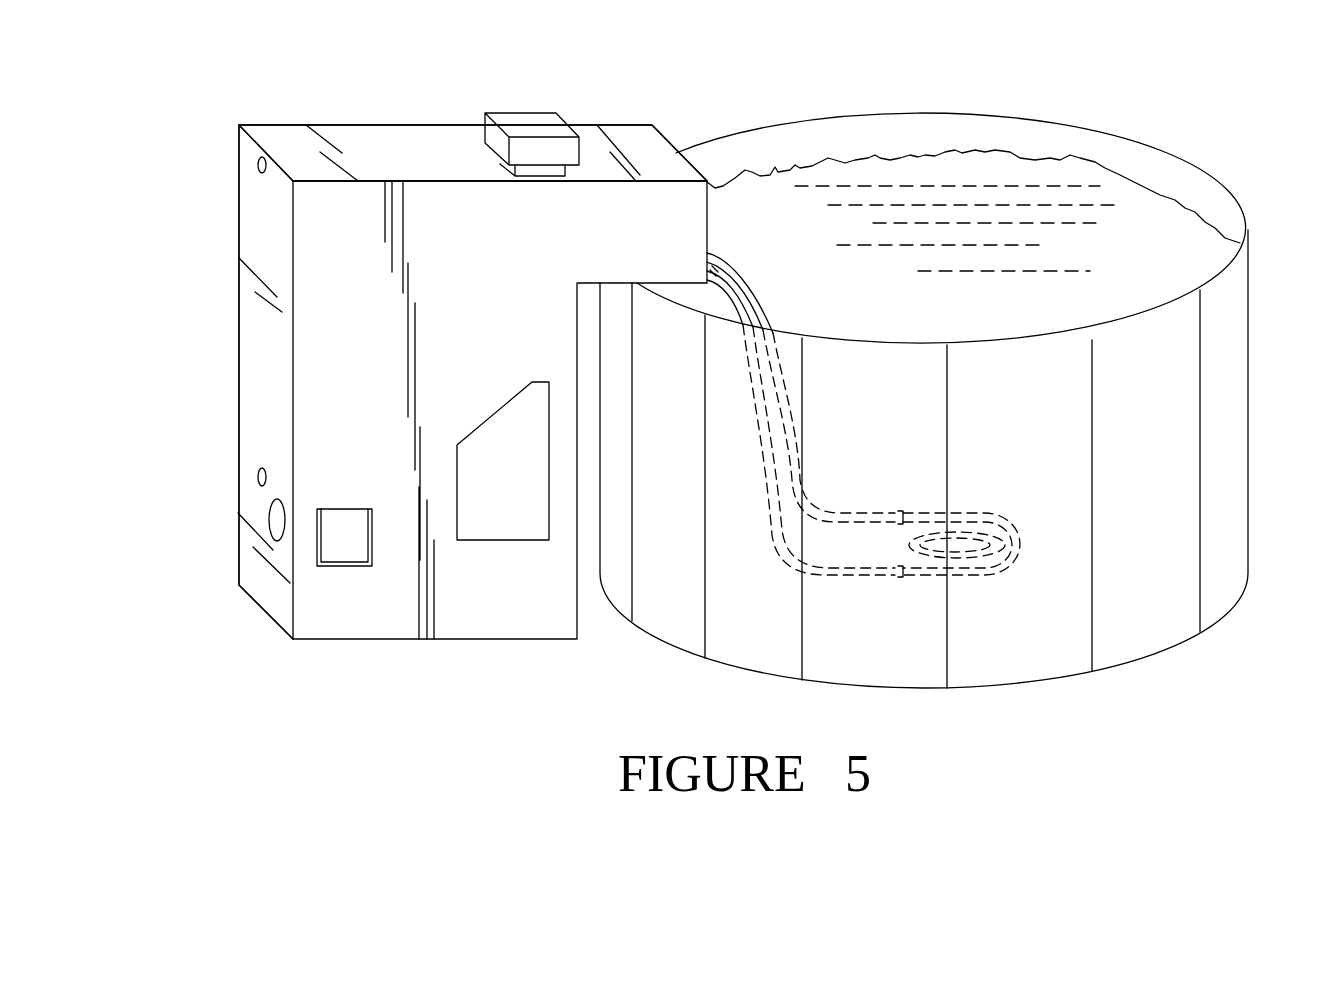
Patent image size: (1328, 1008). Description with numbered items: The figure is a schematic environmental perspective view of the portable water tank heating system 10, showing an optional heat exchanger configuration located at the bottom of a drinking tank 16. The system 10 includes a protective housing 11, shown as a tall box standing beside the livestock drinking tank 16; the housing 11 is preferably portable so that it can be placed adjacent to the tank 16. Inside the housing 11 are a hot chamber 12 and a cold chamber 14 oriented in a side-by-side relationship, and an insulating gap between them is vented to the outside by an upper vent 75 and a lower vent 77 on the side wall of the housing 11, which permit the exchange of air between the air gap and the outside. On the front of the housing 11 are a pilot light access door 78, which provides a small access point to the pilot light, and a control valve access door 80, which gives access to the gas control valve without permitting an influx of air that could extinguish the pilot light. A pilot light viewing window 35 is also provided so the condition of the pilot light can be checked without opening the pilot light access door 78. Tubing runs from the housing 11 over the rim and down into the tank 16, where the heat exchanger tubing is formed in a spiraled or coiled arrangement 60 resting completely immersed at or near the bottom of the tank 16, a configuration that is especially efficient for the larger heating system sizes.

The portable water tank heating system 10 is at (625, 102).
The protective housing 11 is at (260, 333).
The hot chamber 12 is at (327, 602).
The cold chamber 14 is at (423, 148).
The drinking tank 16 is at (1140, 613).
The pilot light viewing window 35 is at (268, 527).
The coiled arrangement 60 is at (1012, 523).
The upper vent 75 is at (255, 155).
The lower vent 77 is at (255, 468).
The pilot light access door 78 is at (337, 533).
The control valve access door 80 is at (515, 517).